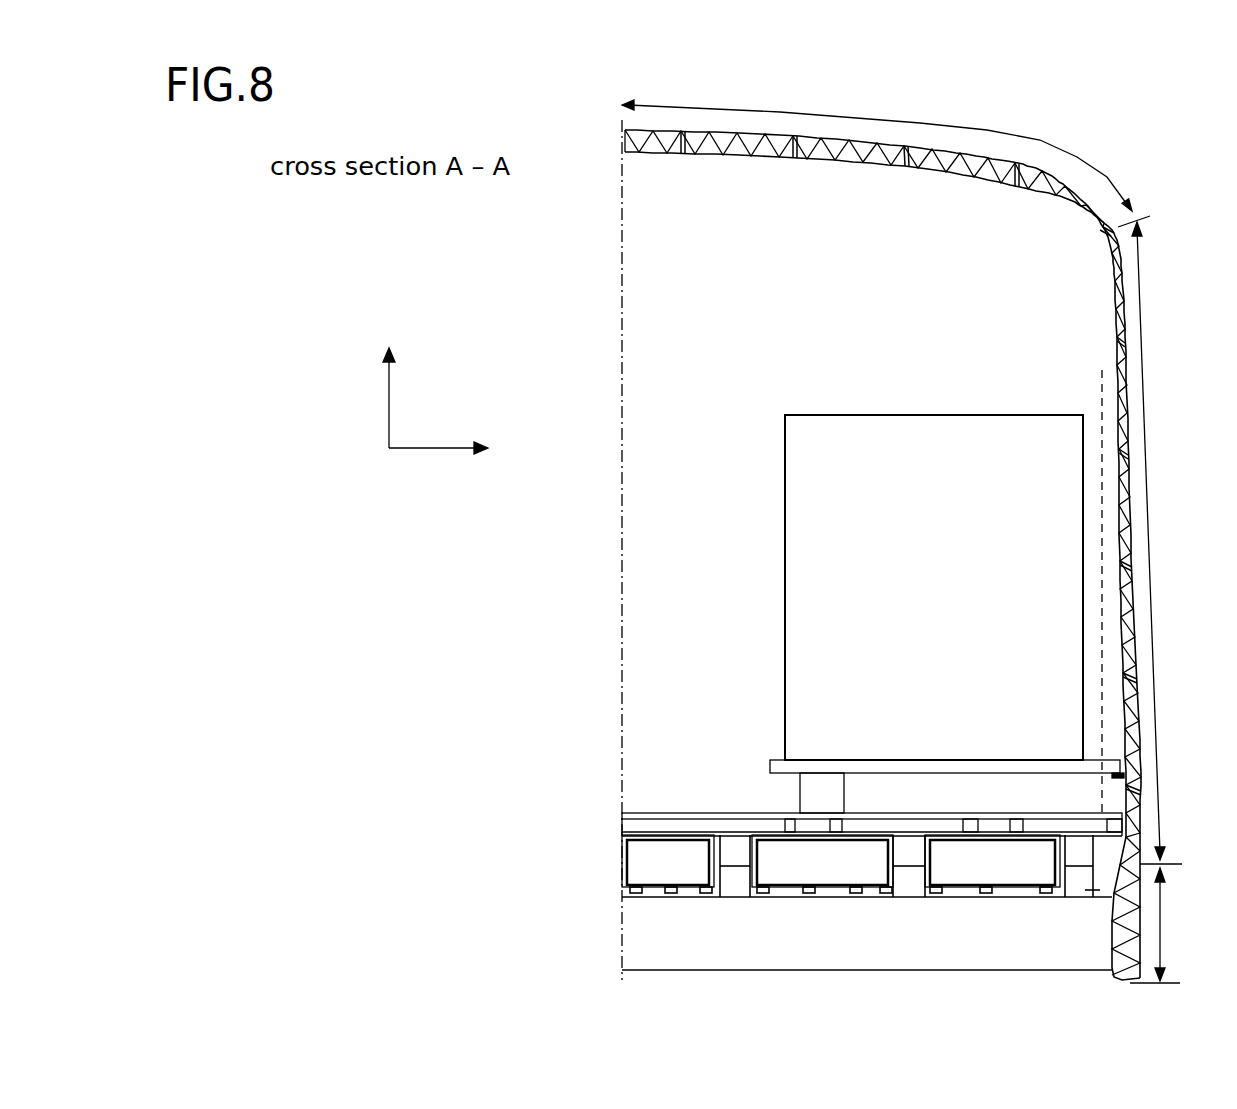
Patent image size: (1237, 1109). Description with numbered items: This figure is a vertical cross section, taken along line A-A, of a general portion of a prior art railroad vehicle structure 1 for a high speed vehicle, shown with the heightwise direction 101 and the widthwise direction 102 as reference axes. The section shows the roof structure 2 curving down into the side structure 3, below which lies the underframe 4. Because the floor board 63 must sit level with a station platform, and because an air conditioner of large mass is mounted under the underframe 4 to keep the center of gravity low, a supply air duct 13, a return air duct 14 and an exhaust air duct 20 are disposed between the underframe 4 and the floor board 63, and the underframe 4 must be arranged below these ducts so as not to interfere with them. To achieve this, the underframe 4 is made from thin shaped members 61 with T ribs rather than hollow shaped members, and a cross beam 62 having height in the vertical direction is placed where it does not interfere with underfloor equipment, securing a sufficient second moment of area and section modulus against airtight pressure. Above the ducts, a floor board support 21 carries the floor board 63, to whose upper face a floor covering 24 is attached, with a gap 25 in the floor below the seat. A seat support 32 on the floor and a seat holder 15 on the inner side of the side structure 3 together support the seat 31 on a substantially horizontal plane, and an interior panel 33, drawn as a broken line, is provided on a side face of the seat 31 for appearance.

The railroad vehicle structure 1 is at (1166, 180).
The roof structure 2 is at (877, 149).
The side structure 3 is at (1150, 540).
The underframe 4 is at (1156, 925).
The supply air duct 13 is at (1026, 877).
The return air duct 14 is at (852, 877).
The seat holder 15 is at (1115, 777).
The exhaust air duct 20 is at (684, 877).
The floor board support 21 is at (733, 880).
The floor covering 24 is at (727, 815).
The gap 25 is at (818, 825).
The seat 31 is at (876, 452).
The seat support 32 is at (836, 804).
The interior panel 33 is at (1100, 623).
The thin shaped member with T ribs 61 is at (656, 899).
The cross beam 62 is at (684, 963).
The floor board 63 is at (621, 826).
The heightwise direction 101 is at (390, 379).
The widthwise direction 102 is at (469, 452).